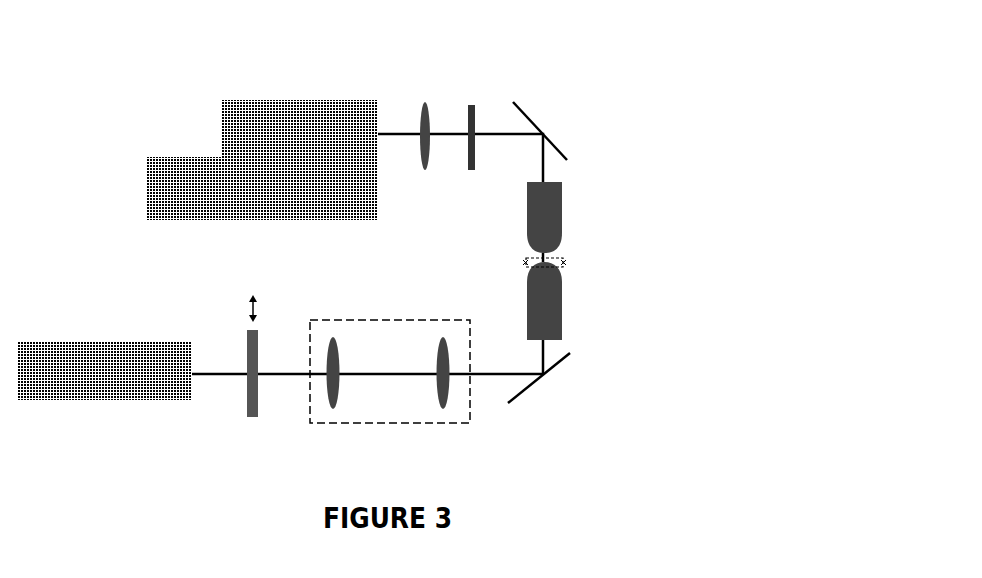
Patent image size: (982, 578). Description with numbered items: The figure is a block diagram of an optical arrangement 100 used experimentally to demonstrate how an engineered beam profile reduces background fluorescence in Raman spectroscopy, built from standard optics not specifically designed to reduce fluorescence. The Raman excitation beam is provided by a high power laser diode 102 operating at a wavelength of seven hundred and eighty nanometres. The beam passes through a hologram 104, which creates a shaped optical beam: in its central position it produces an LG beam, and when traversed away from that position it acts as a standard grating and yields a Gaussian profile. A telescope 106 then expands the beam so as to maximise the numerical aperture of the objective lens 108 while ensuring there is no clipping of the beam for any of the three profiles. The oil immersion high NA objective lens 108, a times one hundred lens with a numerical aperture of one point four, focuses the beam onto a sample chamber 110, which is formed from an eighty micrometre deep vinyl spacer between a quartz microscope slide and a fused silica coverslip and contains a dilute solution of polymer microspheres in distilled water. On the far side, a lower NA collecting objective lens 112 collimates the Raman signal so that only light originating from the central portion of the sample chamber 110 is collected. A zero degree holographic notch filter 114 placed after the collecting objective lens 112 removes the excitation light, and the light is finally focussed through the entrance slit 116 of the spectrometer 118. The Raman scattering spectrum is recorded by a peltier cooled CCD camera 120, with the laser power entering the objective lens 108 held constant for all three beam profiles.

The optical arrangement 100 is at (246, 31).
The laser diode 102 is at (117, 398).
The hologram 104 is at (247, 343).
The telescope 106 is at (325, 318).
The objective lens 108 is at (526, 312).
The sample chamber 110 is at (522, 260).
The collecting objective lens 112 is at (526, 212).
The holographic notch filter 114 is at (470, 174).
The entrance slit 116 is at (421, 118).
The spectrometer 118 is at (358, 222).
The CCD camera 120 is at (208, 222).